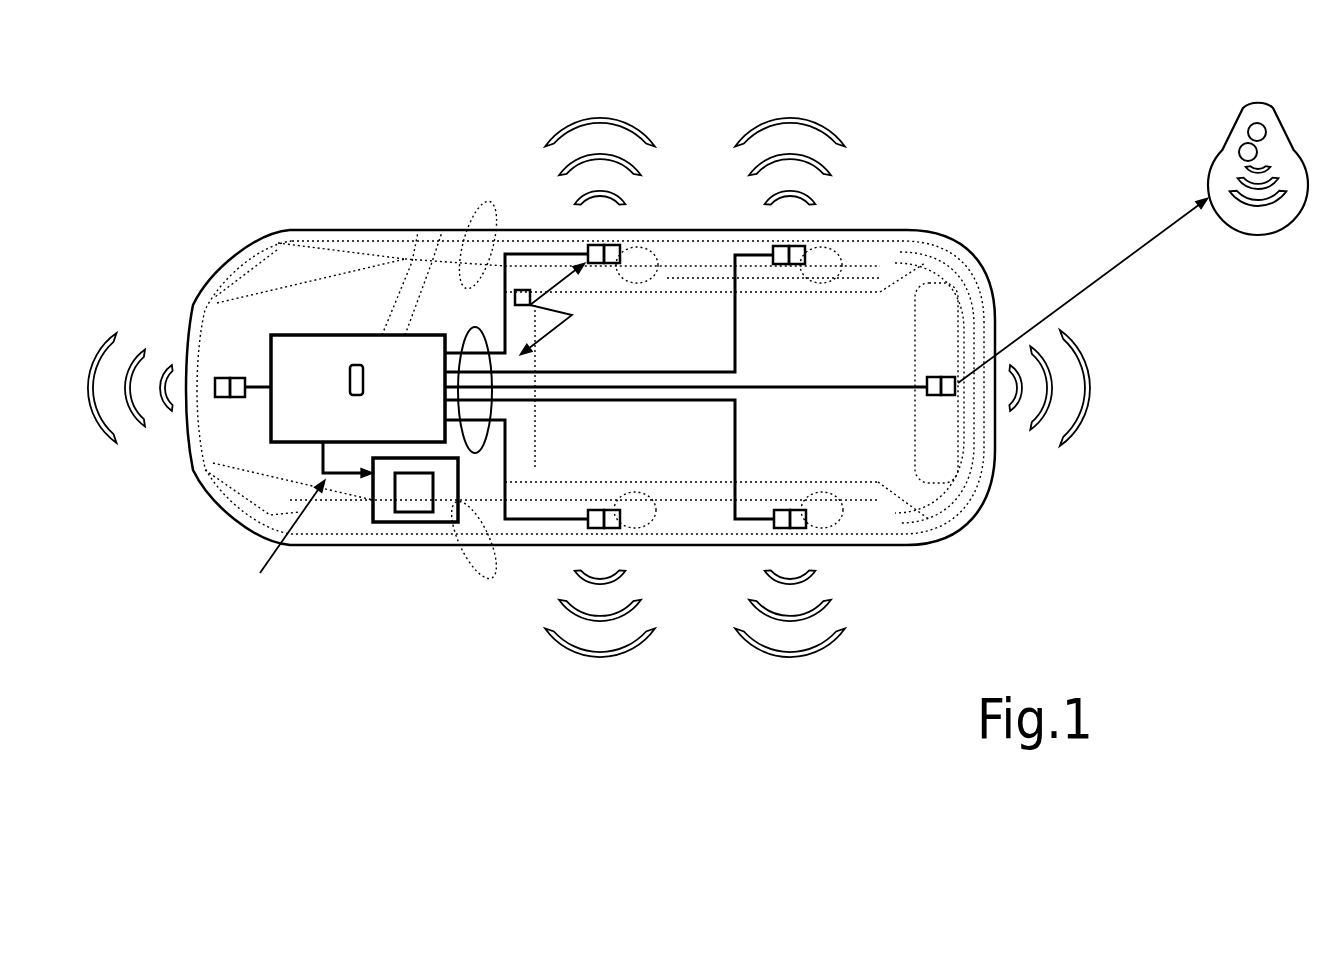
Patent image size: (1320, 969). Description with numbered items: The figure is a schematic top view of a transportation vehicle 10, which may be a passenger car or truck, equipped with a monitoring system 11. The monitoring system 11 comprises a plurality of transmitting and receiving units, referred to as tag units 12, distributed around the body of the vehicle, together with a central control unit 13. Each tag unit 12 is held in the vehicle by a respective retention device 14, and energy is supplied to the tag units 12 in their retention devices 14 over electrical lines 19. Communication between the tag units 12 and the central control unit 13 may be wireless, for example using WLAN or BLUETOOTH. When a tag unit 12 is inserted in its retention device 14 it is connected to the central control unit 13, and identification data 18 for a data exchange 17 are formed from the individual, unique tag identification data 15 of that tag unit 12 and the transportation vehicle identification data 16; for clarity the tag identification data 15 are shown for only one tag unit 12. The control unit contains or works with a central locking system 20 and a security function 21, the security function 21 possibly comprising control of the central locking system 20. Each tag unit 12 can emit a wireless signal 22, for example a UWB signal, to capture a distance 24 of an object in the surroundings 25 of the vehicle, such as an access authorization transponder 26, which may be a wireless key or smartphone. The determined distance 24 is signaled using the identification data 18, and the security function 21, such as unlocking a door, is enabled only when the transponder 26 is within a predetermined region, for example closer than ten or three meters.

The transportation vehicle 10 is at (340, 546).
The monitoring system 11 is at (279, 544).
The tag unit 12 is at (226, 397).
The central control unit 13 is at (320, 335).
The retention device 14 is at (228, 378).
The tag identification data 15 is at (605, 264).
The transportation vehicle identification data 16 is at (356, 365).
The data exchange 17 is at (572, 315).
The identification data 18 is at (527, 316).
The electrical lines 19 is at (478, 453).
The central locking system 20 is at (410, 512).
The security function 21 is at (440, 522).
The wireless signal 22 is at (608, 118).
The distance 24 is at (1108, 267).
The surroundings 25 is at (1190, 385).
The access authorization transponder 26 is at (1240, 107).